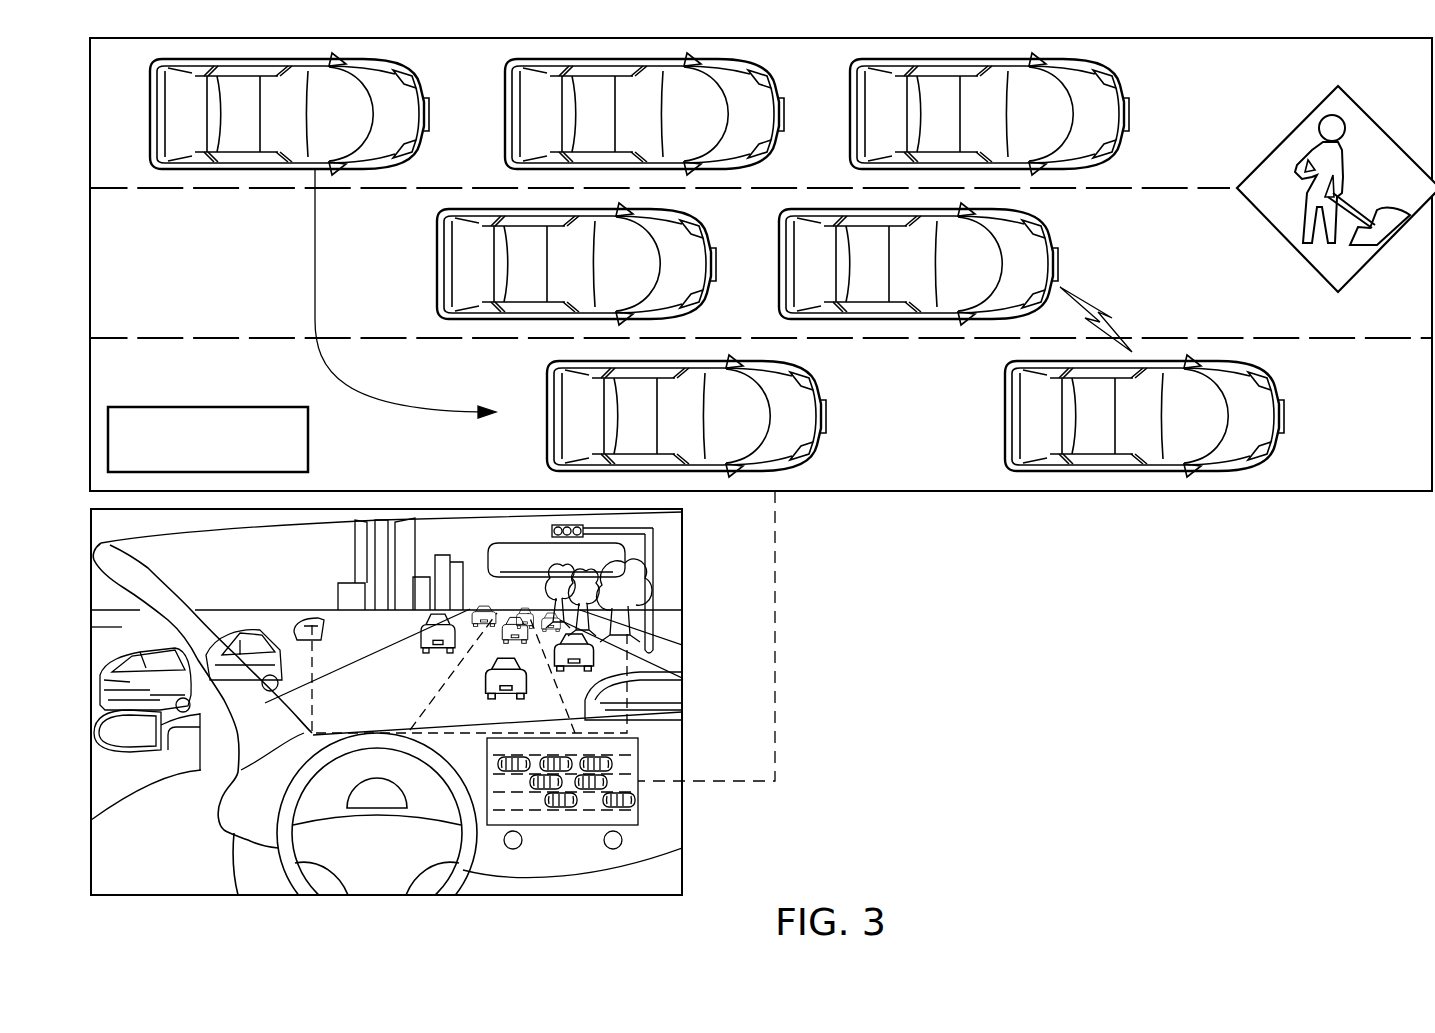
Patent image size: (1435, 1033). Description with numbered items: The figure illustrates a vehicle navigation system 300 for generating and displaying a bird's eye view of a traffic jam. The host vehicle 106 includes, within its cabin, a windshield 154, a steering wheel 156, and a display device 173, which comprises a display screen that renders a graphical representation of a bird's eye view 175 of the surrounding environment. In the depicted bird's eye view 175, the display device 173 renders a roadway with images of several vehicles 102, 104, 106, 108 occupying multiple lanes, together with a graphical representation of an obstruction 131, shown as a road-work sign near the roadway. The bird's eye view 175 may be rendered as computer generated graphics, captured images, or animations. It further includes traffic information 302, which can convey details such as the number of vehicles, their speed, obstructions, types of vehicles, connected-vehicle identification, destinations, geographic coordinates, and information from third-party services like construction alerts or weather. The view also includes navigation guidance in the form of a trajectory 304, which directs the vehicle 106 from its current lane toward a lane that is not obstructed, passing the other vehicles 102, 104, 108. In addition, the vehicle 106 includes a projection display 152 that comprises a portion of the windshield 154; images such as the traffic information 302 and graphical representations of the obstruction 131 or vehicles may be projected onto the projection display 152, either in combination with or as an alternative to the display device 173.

The vehicle 102 is at (1057, 262).
The vehicle 104 is at (435, 262).
The vehicle 106 is at (280, 168).
The vehicle 108 is at (1283, 420).
The obstruction 131 is at (1388, 137).
The projection display 152 is at (648, 660).
The windshield 154 is at (178, 548).
The steering wheel 156 is at (383, 880).
The display device 173 is at (568, 826).
The bird's eye view 175 is at (1025, 492).
The vehicle navigation system 300 is at (1171, 648).
The traffic information 302 is at (208, 407).
The trajectory 304 is at (315, 270).